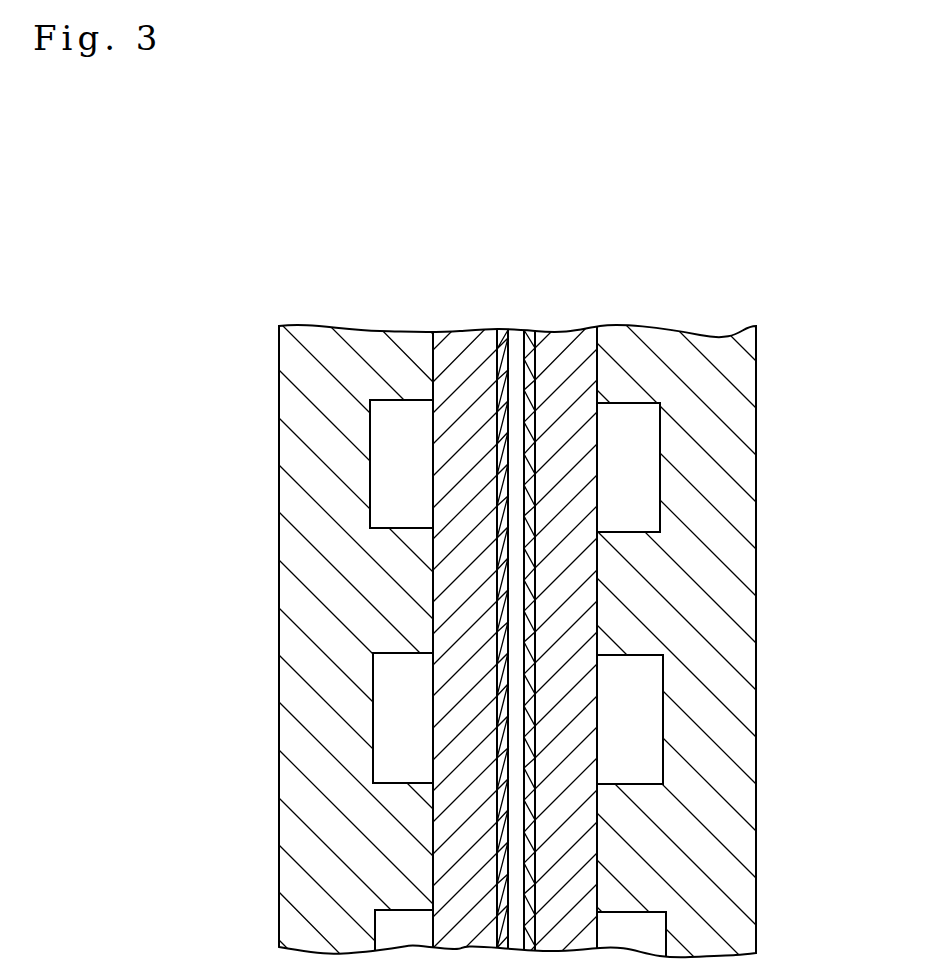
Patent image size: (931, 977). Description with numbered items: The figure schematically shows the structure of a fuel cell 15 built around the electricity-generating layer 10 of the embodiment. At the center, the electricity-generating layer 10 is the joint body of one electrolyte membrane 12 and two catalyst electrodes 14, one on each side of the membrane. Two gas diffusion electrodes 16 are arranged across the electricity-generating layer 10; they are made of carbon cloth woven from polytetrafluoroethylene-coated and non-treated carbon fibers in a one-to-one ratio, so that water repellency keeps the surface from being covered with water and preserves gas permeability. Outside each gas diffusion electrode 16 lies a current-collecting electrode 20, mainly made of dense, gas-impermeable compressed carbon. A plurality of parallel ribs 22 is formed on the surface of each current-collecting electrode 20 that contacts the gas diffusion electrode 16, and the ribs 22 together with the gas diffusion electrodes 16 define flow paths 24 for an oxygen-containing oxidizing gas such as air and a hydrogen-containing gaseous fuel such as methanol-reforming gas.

The electricity-generating layer 10 is at (588, 267).
The electrolyte membrane 12 is at (518, 332).
The catalyst electrode 14 is at (503, 332).
The fuel cell 15 is at (655, 283).
The gas diffusion electrode 16 is at (463, 332).
The current-collecting electrode 20 is at (354, 330).
The rib 22 is at (410, 527).
The flow path 24 is at (403, 722).